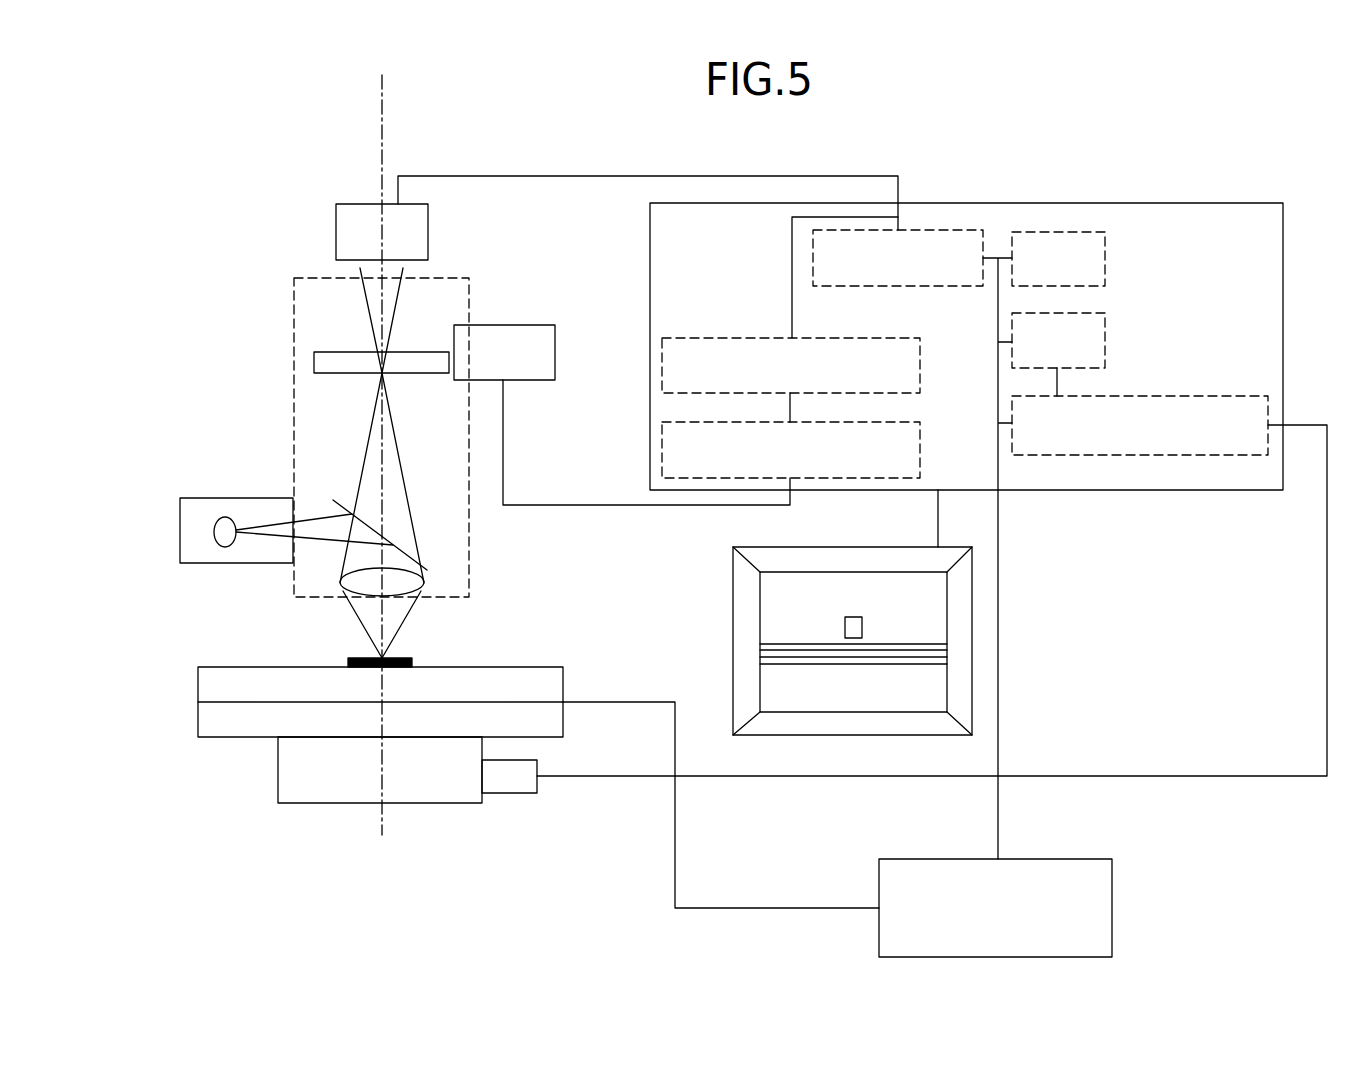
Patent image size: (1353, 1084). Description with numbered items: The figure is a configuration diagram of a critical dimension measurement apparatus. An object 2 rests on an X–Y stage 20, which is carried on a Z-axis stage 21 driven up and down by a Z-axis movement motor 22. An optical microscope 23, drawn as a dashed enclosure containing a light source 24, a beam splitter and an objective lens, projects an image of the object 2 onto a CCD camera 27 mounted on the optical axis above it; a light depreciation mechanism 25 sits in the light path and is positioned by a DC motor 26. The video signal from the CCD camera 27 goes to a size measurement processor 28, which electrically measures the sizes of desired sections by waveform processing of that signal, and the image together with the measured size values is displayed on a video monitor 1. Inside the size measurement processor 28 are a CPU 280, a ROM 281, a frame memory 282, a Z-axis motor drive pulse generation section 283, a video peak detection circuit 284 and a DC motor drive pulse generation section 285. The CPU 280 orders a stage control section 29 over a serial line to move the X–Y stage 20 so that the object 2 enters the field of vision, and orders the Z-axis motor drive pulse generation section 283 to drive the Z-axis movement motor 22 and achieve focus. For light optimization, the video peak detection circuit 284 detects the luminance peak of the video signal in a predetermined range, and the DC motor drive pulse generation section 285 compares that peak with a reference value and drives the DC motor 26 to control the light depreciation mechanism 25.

The video monitor 1 is at (770, 597).
The object 2 is at (405, 657).
The X–Y stage 20 is at (198, 680).
The Z-axis stage 21 is at (278, 770).
The Z-axis movement motor 22 is at (507, 795).
The optical microscope 23 is at (294, 435).
The light source 24 is at (214, 530).
The light depreciation mechanism 25 is at (314, 356).
The DC motor 26 is at (487, 325).
The CCD camera 27 is at (428, 230).
The size measurement processor 28 is at (1197, 203).
The stage control section 29 is at (1112, 905).
The CPU 280 is at (1105, 258).
The ROM 281 is at (1105, 340).
The frame memory 282 is at (952, 230).
The Z-axis motor drive pulse generation section 283 is at (1137, 396).
The video peak detection circuit 284 is at (662, 367).
The DC motor drive pulse generation section 285 is at (662, 447).